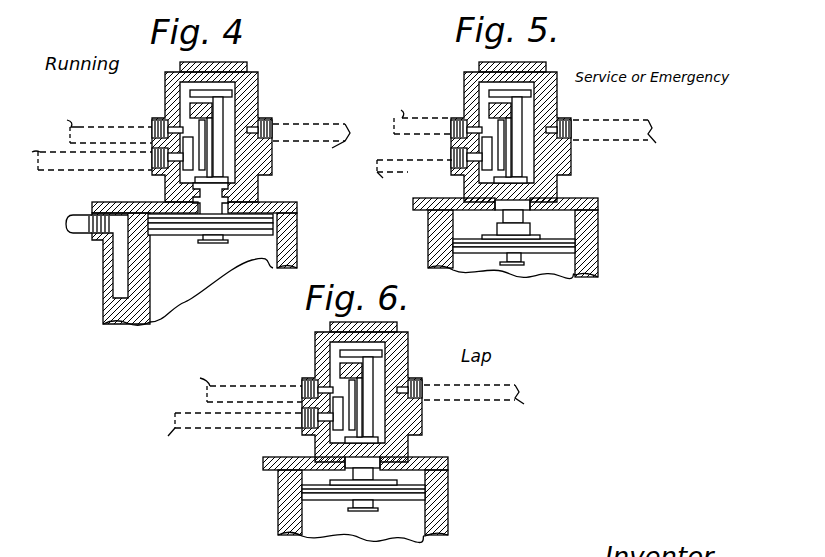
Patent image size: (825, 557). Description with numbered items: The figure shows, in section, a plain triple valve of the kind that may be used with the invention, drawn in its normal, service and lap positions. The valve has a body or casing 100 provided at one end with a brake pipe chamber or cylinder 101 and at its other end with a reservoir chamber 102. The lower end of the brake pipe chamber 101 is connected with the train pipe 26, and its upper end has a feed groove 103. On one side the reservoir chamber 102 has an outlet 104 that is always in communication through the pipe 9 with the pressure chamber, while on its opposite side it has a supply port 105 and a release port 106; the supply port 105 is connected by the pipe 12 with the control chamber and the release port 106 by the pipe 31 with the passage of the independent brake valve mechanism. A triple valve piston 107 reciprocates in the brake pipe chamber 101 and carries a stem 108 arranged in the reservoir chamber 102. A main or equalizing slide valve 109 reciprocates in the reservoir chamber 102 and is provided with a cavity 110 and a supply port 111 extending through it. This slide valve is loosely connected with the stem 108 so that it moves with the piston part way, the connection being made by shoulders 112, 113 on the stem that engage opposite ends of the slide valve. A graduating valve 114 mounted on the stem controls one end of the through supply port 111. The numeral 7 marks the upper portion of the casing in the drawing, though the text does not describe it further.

In FIG. 4, the valve casing 7 is at (207, 129).
In FIG. 5, the valve casing 7 is at (507, 129).
In FIG. 6, the valve casing 7 is at (356, 394).
In FIG. 4, the pipe 9 is at (311, 145).
In FIG. 5, the pipe 9 is at (620, 141).
In FIG. 6, the pipe 9 is at (481, 400).
In FIG. 4, the pipe 12 is at (102, 123).
In FIG. 5, the pipe 12 is at (419, 112).
In FIG. 6, the pipe 12 is at (241, 380).
In FIG. 4, the pipe 26 is at (66, 222).
In FIG. 4, the pipe 31 is at (79, 155).
In FIG. 5, the pipe 31 is at (414, 177).
In FIG. 6, the pipe 31 is at (224, 433).
In FIG. 4, the body or casing 100 is at (103, 280).
In FIG. 5, the body or casing 100 is at (533, 250).
In FIG. 6, the body or casing 100 is at (381, 487).
In FIG. 4, the brake pipe chamber 101 is at (172, 310).
In FIG. 5, the brake pipe chamber 101 is at (490, 270).
In FIG. 6, the brake pipe chamber 101 is at (325, 527).
In FIG. 4, the reservoir chamber 102 is at (262, 200).
In FIG. 5, the reservoir chamber 102 is at (528, 78).
In FIG. 6, the reservoir chamber 102 is at (382, 355).
In FIG. 4, the feed groove 103 is at (268, 236).
In FIG. 5, the feed groove 103 is at (565, 227).
In FIG. 6, the feed groove 103 is at (420, 487).
In FIG. 4, the outlet 104 is at (262, 130).
In FIG. 5, the outlet 104 is at (568, 132).
In FIG. 6, the outlet 104 is at (412, 390).
In FIG. 4, the supply port 105 is at (166, 134).
In FIG. 5, the supply port 105 is at (460, 128).
In FIG. 6, the supply port 105 is at (300, 392).
In FIG. 4, the release port 106 is at (153, 163).
In FIG. 5, the release port 106 is at (462, 163).
In FIG. 6, the release port 106 is at (300, 428).
In FIG. 4, the triple valve piston 107 is at (240, 232).
In FIG. 5, the triple valve piston 107 is at (550, 252).
In FIG. 6, the triple valve piston 107 is at (392, 502).
In FIG. 4, the stem 108 is at (292, 212).
In FIG. 5, the stem 108 is at (540, 210).
In FIG. 6, the stem 108 is at (372, 427).
In FIG. 4, the main or equalizing slide valve 109 is at (208, 110).
In FIG. 5, the main or equalizing slide valve 109 is at (537, 113).
In FIG. 6, the main or equalizing slide valve 109 is at (363, 377).
In FIG. 4, the cavity 110 is at (188, 145).
In FIG. 5, the cavity 110 is at (495, 171).
In FIG. 6, the cavity 110 is at (343, 432).
In FIG. 4, the supply port 111 is at (190, 113).
In FIG. 5, the supply port 111 is at (532, 143).
In FIG. 6, the supply port 111 is at (333, 383).
In FIG. 4, the shoulder 112 is at (206, 92).
In FIG. 5, the shoulder 112 is at (508, 122).
In FIG. 6, the shoulder 112 is at (360, 366).
In FIG. 4, the shoulder 113 is at (210, 203).
In FIG. 5, the shoulder 113 is at (498, 205).
In FIG. 6, the shoulder 113 is at (375, 452).
In FIG. 4, the graduating valve 114 is at (203, 152).
In FIG. 5, the graduating valve 114 is at (505, 184).
In FIG. 6, the graduating valve 114 is at (298, 470).